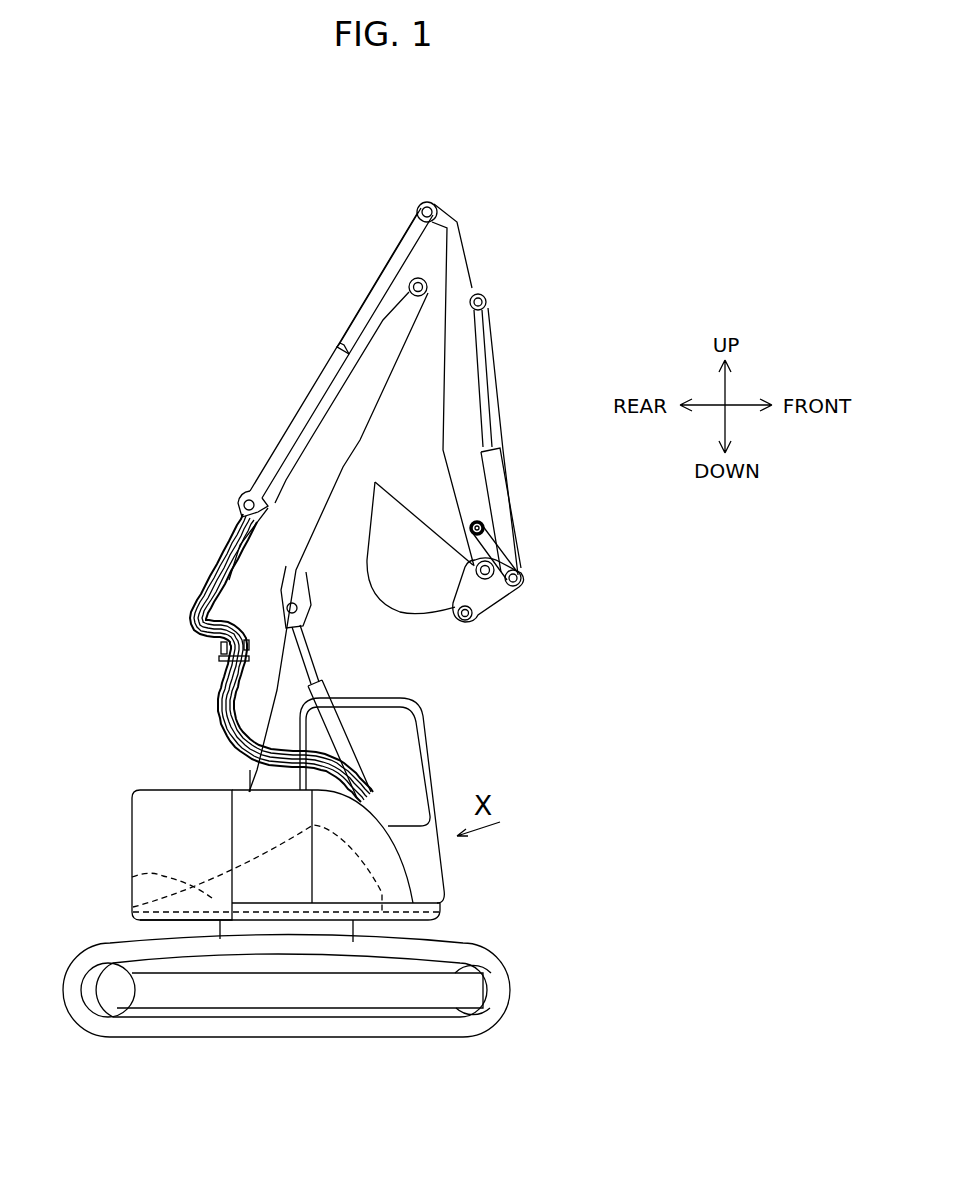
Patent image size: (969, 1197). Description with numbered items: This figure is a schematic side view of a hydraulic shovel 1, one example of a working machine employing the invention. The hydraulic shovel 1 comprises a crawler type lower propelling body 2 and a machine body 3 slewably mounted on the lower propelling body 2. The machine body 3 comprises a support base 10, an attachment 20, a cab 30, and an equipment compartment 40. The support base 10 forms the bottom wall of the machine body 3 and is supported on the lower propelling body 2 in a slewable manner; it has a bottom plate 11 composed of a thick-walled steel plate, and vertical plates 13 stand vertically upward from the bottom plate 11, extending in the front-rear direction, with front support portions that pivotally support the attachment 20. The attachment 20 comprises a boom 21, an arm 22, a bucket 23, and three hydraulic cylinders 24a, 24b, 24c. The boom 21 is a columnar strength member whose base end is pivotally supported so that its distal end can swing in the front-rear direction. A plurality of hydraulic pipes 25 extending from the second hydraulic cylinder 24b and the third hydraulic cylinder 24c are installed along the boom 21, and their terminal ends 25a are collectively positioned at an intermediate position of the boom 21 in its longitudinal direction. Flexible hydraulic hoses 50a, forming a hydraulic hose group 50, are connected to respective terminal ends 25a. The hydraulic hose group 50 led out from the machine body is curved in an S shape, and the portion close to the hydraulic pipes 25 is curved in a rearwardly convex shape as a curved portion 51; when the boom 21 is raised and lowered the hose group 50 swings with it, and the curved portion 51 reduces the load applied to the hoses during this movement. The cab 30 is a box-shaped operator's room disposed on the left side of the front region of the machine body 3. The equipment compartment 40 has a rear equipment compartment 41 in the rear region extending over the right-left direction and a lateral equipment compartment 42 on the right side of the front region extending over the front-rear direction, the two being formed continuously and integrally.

The hydraulic shovel 1 is at (620, 176).
The lower propelling body 2 is at (510, 990).
The machine body 3 is at (180, 566).
The support base 10 is at (443, 906).
The bottom plate 11 is at (132, 916).
The vertical plates 13 is at (132, 877).
The attachment 20 is at (524, 526).
The boom 21 is at (333, 408).
The arm 22 is at (462, 395).
The bucket 23 is at (390, 498).
The hydraulic cylinder 24a is at (335, 742).
The second hydraulic cylinder 24b is at (288, 430).
The third hydraulic cylinder 24c is at (483, 335).
The hydraulic pipes 25 is at (228, 548).
The terminal ends 25a is at (220, 658).
The cab 30 is at (425, 752).
The equipment compartment 40 is at (72, 748).
The rear equipment compartment 41 is at (140, 840).
The lateral equipment compartment 42 is at (245, 800).
The hydraulic hose group 50 is at (128, 686).
The hydraulic hoses 50a is at (225, 735).
The curved portion 51 is at (254, 703).